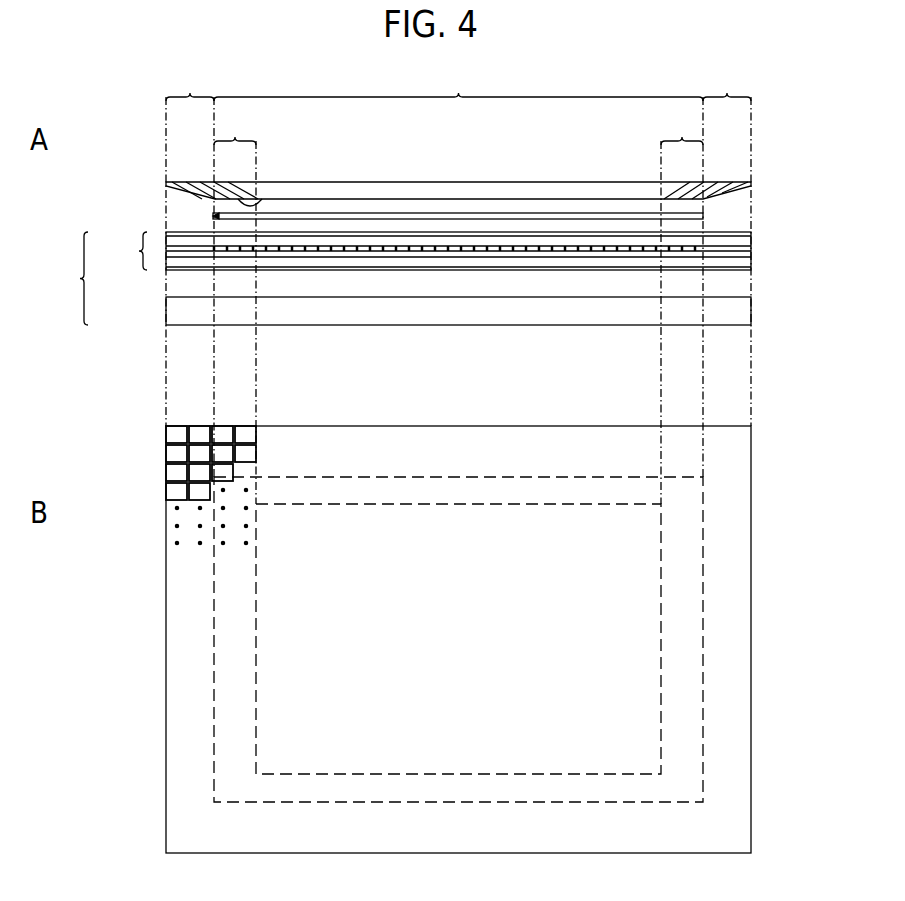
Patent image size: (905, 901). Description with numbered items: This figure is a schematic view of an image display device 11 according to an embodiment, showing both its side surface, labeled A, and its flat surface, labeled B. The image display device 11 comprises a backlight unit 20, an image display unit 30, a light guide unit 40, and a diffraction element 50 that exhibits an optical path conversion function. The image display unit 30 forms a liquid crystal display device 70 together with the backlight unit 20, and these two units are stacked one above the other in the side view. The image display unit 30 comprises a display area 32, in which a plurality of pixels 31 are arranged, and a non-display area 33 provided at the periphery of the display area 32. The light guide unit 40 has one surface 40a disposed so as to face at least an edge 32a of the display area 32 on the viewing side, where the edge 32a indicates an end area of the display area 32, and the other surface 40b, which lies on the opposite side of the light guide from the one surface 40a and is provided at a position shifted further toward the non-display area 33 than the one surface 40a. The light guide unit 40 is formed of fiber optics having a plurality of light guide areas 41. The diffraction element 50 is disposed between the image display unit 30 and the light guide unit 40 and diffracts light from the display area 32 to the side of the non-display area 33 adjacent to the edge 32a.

The image display device 11 is at (799, 149).
The backlight unit 20 is at (166, 314).
The image display unit 30 is at (460, 236).
The pixels 31 is at (690, 247).
The display area 32 is at (530, 613).
The edge of the display area 32a is at (798, 572).
The non-display area 33 is at (795, 638).
The light guide unit 40 is at (424, 170).
The one surface 40a is at (259, 198).
The other surface 40b is at (193, 181).
The light guide areas 41 is at (176, 453).
The diffraction element 50 is at (212, 216).
The liquid crystal display device 70 is at (65, 278).